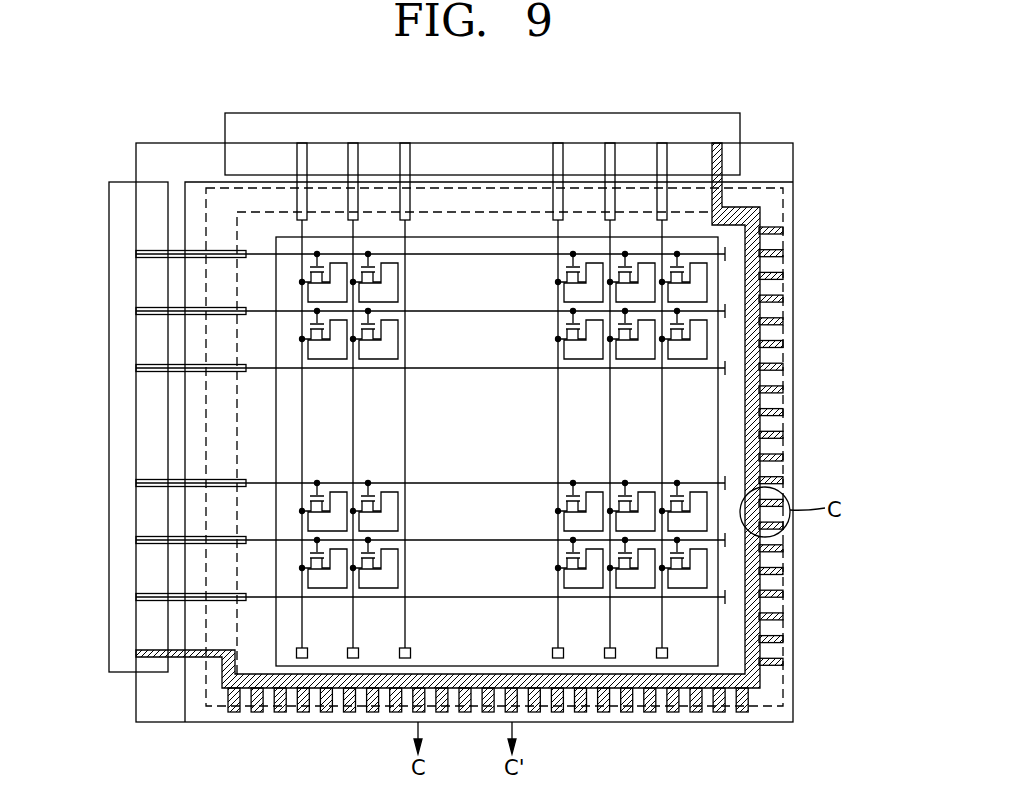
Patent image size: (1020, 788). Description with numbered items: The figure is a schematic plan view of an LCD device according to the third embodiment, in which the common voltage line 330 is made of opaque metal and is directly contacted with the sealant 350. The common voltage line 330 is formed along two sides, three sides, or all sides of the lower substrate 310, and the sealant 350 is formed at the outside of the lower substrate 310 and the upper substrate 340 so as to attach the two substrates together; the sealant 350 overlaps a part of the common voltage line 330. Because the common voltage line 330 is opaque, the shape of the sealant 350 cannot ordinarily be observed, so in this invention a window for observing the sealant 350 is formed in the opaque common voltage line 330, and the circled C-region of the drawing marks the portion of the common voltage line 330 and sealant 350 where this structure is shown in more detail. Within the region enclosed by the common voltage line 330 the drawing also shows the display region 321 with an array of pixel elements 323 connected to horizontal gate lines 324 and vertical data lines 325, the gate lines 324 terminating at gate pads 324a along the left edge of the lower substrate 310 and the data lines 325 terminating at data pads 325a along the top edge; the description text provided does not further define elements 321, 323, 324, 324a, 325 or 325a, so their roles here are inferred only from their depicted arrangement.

The lower substrate 310 is at (136, 713).
The display area 321 is at (250, 457).
The pixel electrode / thin film transistor 323 is at (340, 266).
The gate line 324 is at (502, 250).
The gate pad 324a is at (157, 373).
The data line 325 is at (560, 217).
The data pad 325a is at (663, 163).
The common voltage line 330 is at (763, 424).
The upper substrate 340 is at (760, 180).
The sealant 350 is at (778, 263).